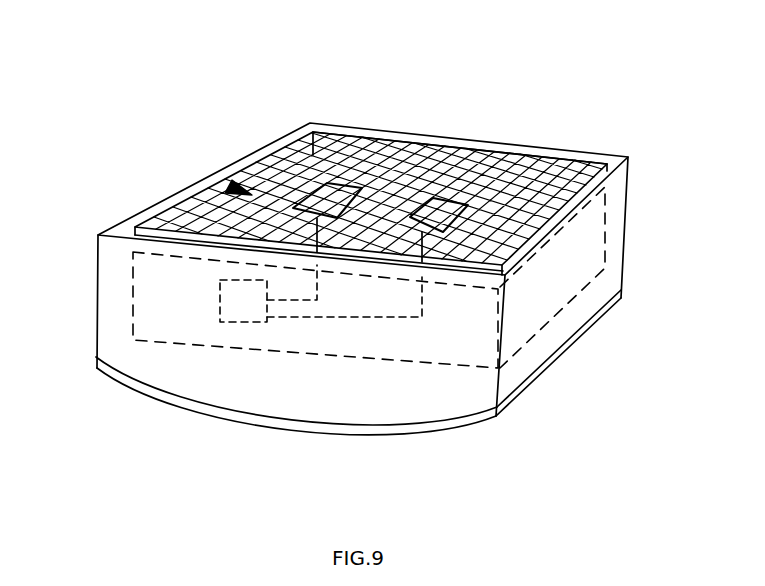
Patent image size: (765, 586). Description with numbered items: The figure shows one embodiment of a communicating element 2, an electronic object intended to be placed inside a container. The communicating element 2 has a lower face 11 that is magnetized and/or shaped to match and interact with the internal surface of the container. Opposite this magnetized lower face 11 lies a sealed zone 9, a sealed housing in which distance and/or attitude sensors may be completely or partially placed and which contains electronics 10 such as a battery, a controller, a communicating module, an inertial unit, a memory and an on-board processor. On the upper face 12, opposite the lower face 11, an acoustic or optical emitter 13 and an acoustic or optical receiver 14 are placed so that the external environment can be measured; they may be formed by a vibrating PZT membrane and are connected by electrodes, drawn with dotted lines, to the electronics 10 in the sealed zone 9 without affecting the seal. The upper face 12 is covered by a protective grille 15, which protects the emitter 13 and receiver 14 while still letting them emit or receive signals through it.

The communicating element 2 is at (652, 151).
The sealed zone 9 is at (133, 325).
The electronics 10 is at (220, 297).
The lower face 11 is at (212, 418).
The upper face 12 is at (417, 128).
The emitter 13 is at (317, 185).
The receiver 14 is at (446, 203).
The protective grille 15 is at (229, 187).